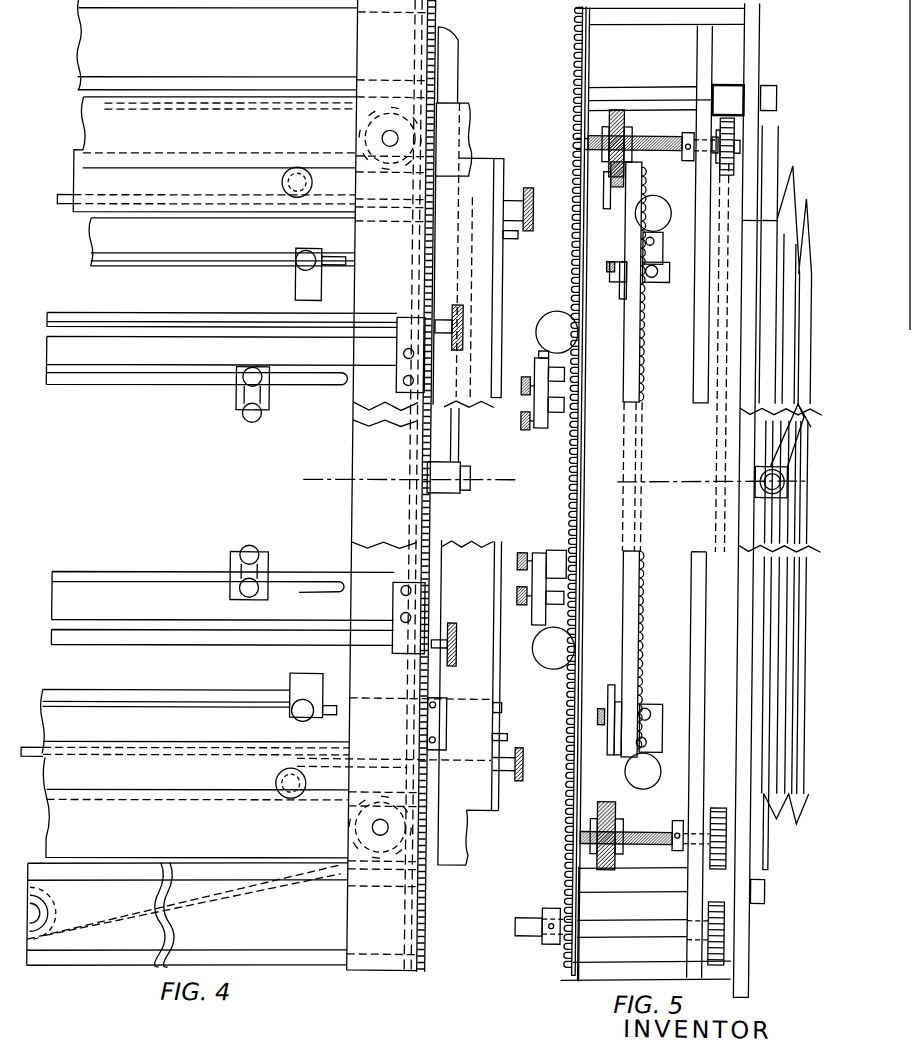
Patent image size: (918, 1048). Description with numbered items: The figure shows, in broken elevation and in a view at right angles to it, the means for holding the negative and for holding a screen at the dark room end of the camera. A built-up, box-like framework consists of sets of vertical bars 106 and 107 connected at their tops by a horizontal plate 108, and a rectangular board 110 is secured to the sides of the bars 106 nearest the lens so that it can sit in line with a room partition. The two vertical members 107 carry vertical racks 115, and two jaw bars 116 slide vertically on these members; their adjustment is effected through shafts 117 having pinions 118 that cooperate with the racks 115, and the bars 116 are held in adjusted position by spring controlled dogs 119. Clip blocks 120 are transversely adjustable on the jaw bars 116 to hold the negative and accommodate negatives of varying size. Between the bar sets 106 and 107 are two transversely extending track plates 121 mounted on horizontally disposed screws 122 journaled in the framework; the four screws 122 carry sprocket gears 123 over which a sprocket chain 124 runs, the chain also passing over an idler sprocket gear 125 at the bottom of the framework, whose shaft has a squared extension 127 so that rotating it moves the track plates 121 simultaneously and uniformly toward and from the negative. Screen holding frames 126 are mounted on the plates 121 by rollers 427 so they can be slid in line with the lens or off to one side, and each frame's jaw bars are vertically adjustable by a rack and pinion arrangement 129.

In FIG. 5, the vertical bars 106 is at (752, 58).
In FIG. 5, the vertical bars 107 is at (582, 60).
In FIG. 5, the horizontal plate 108 is at (637, 11).
In FIG. 5, the rectangular board 110 is at (767, 137).
In FIG. 5, the vertical racks 115 is at (571, 126).
In FIG. 4, the jaw bars 116 is at (159, 358).
In FIG. 4, the shafts 117 is at (244, 327).
In FIG. 4, the pinions 118 is at (422, 314).
In FIG. 5, the spring controlled dogs 119 is at (560, 369).
In FIG. 4, the clip blocks 120 is at (242, 391).
In FIG. 5, the rail or track plates 121 is at (622, 108).
In FIG. 5, the screws 122 is at (653, 141).
In FIG. 5, the sprocket gears 123 is at (729, 127).
In FIG. 5, the sprocket chain 124 is at (720, 214).
In FIG. 4, the idler sprocket gear 125 is at (38, 928).
In FIG. 5, the screen holding frames 126 is at (612, 927).
In FIG. 5, the squared extension 127 is at (523, 918).
In FIG. 5, the rack and pinion arrangement 129 is at (625, 972).
In FIG. 5, the rollers 427 is at (619, 193).